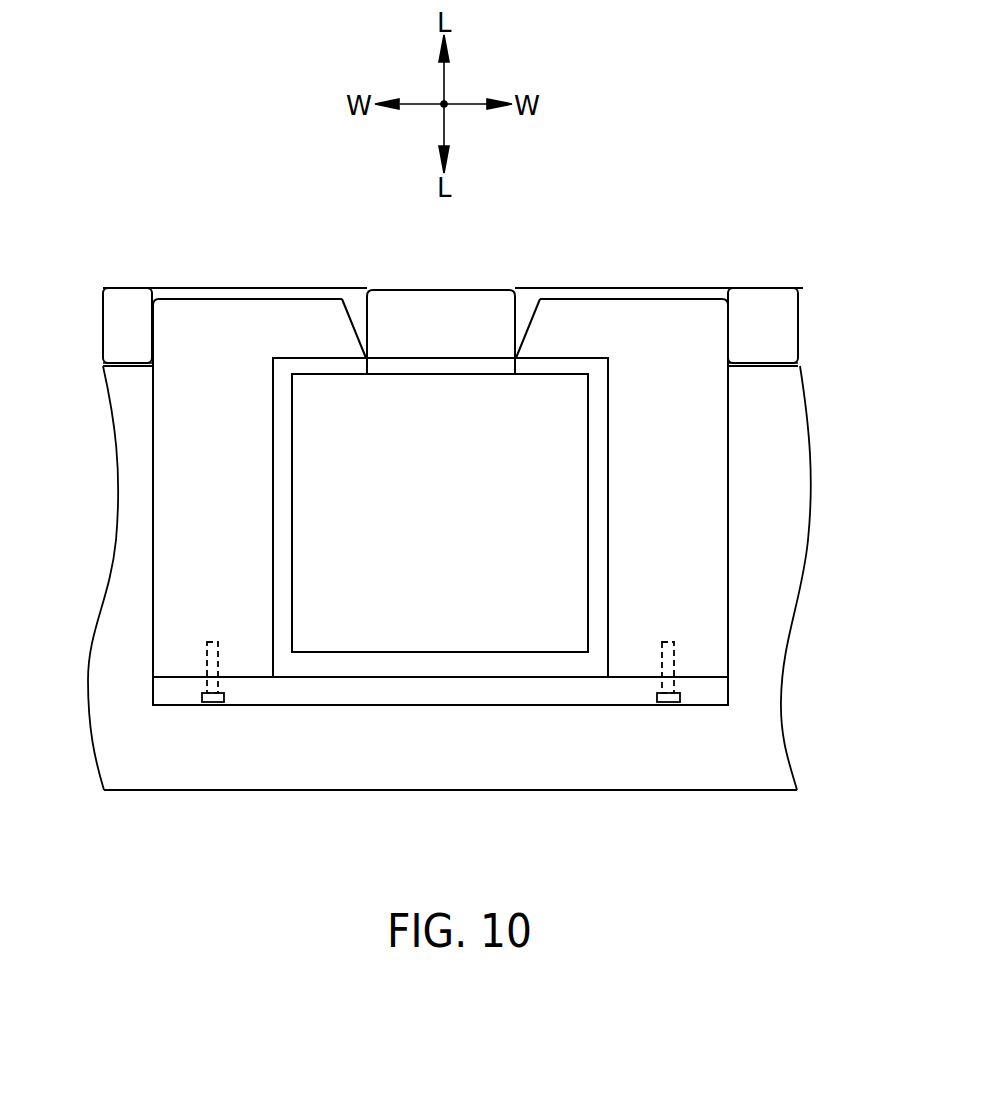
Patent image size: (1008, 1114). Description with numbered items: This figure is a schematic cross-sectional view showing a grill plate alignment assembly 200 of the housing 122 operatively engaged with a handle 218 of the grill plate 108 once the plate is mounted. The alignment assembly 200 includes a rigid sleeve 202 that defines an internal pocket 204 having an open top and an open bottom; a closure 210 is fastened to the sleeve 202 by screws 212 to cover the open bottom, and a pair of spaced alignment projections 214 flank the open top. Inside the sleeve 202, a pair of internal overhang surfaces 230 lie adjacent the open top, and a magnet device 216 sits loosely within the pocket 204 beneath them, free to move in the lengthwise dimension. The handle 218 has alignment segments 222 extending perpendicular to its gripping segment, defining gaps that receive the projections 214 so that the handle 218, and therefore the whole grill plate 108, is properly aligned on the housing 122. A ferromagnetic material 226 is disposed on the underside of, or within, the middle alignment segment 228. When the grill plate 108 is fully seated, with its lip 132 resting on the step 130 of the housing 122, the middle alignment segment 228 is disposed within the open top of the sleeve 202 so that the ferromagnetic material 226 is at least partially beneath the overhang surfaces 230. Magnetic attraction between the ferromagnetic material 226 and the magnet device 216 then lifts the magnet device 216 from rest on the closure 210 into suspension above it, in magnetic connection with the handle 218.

The grill plate 108 is at (673, 288).
The housing 122 is at (757, 773).
The step 130 is at (761, 366).
The lip 132 is at (126, 366).
The alignment assembly 200 is at (720, 300).
The rigid sleeve 202 is at (198, 458).
The internal pocket 204 is at (430, 658).
The closure 210 is at (345, 688).
The screws 212 is at (218, 655).
The alignment projections 214 is at (233, 300).
The magnet device 216 is at (504, 613).
The handle 218 is at (145, 290).
The alignment segments 222 is at (115, 303).
The ferromagnetic material 226 is at (395, 368).
The middle alignment segment 228 is at (467, 308).
The internal overhang surfaces 230 is at (313, 357).